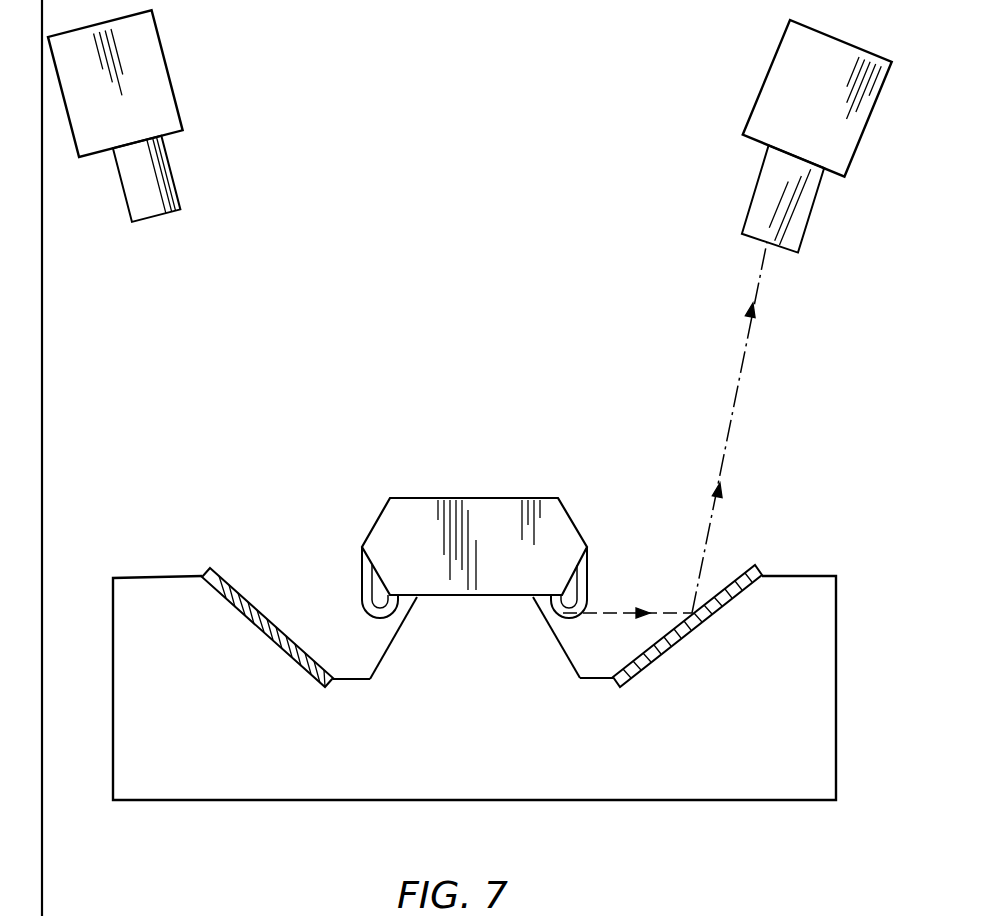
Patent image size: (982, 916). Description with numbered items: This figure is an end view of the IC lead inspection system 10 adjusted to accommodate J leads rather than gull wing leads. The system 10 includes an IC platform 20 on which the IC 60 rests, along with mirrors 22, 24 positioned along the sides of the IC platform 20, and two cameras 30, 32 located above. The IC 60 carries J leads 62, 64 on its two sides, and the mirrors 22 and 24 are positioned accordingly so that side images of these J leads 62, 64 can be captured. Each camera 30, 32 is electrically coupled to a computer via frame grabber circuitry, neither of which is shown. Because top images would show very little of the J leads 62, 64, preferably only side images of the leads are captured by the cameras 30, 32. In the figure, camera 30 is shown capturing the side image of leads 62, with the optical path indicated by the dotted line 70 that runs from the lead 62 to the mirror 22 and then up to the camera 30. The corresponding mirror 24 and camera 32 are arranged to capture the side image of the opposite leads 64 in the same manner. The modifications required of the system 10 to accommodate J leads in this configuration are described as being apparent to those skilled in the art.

The IC lead inspection system 10 is at (237, 817).
The IC platform 20 is at (550, 630).
The mirror 22 is at (712, 617).
The mirror 24 is at (265, 637).
The camera 30 is at (765, 85).
The camera 32 is at (173, 70).
The IC 60 is at (513, 498).
The J lead 62 is at (590, 575).
The J lead 64 is at (362, 583).
The dotted line 70 is at (735, 413).